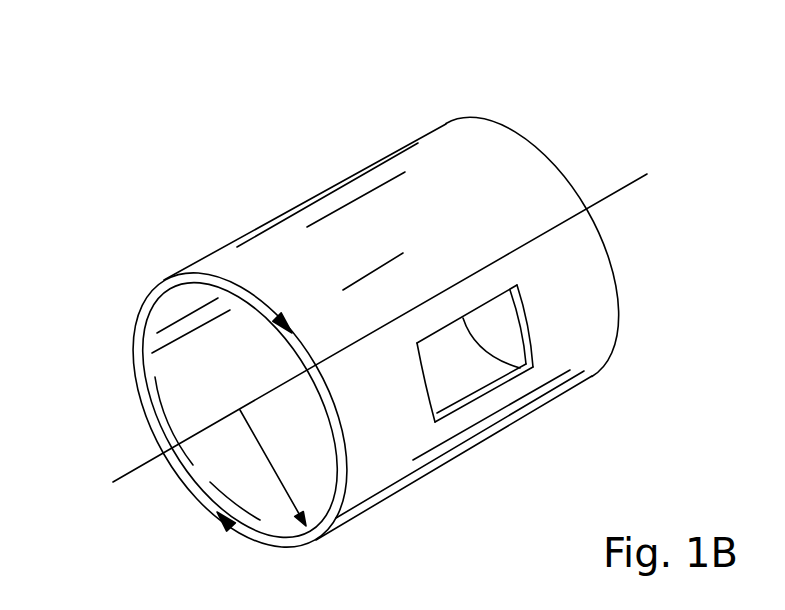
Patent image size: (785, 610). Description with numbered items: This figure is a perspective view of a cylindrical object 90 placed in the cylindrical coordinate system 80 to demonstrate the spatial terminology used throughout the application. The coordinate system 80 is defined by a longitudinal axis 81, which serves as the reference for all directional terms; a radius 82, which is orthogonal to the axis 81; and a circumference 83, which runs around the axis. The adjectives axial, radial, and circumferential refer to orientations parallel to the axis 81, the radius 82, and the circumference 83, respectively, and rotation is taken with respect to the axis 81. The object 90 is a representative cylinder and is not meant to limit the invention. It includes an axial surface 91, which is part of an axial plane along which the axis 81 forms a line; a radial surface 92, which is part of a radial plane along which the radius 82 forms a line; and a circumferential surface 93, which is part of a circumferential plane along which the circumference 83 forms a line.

The cylindrical coordinate system 80 is at (339, 311).
The cylindrical object 90 is at (417, 115).
The circumferential surface 93 is at (354, 220).
The axial surface 91 is at (497, 385).
The radial surface 92 is at (257, 532).
The circumference 83 is at (143, 303).
The longitudinal axis 81 is at (123, 478).
The radius 82 is at (280, 472).